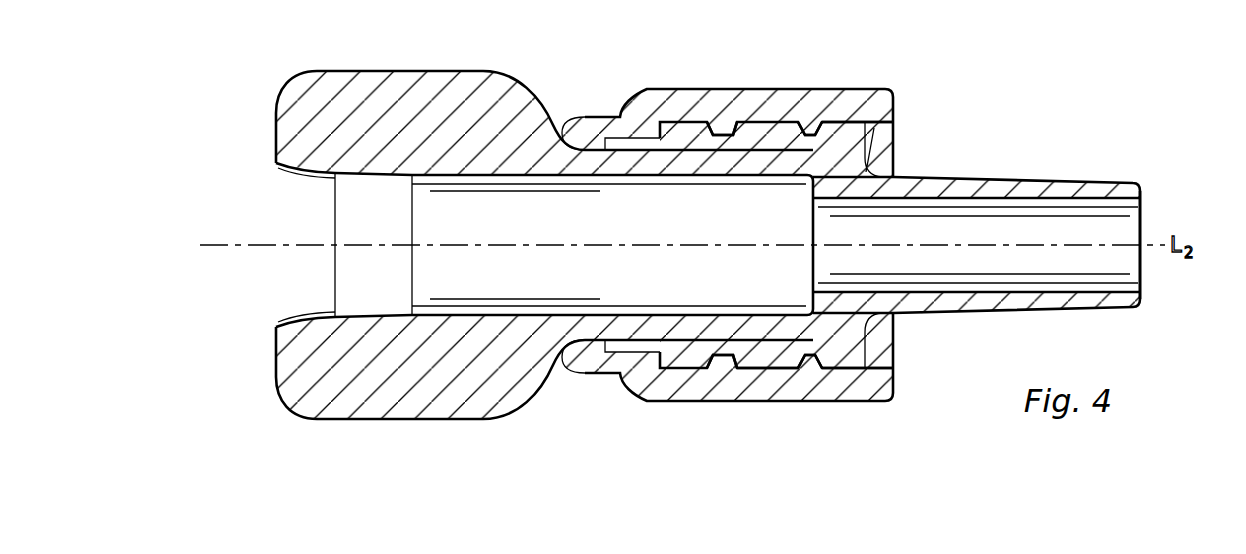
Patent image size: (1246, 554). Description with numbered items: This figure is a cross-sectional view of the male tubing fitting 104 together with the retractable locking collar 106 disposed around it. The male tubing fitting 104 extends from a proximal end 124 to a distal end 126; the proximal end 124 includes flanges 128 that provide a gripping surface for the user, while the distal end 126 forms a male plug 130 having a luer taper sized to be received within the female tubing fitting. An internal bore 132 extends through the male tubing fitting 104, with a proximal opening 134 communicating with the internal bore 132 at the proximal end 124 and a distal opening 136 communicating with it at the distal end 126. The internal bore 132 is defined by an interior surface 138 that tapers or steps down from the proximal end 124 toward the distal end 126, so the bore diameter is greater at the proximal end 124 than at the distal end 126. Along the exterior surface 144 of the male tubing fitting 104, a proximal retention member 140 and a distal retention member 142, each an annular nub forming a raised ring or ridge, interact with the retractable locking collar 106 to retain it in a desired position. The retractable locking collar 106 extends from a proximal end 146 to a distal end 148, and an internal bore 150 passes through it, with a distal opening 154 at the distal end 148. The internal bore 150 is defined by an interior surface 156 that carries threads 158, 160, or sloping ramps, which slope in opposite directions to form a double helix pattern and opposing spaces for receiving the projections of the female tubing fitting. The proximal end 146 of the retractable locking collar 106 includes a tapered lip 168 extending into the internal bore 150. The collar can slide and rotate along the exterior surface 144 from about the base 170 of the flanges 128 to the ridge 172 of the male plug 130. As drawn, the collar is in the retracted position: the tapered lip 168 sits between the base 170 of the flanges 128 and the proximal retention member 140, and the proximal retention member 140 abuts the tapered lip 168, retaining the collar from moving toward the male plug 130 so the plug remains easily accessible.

The male tubing fitting 104 is at (423, 68).
The retractable locking collar 106 is at (866, 82).
The proximal end 124 is at (236, 126).
The distal end 126 is at (1160, 183).
The flanges 128 is at (352, 70).
The male plug 130 is at (1008, 176).
The internal bore 132 is at (577, 260).
The proximal opening 134 is at (276, 205).
The distal opening 136 is at (1142, 277).
The interior surface 138 is at (502, 315).
The proximal retention member 140 is at (622, 150).
The distal retention member 142 is at (752, 140).
The exterior surface 144 is at (684, 135).
The proximal end 146 is at (543, 400).
The distal end 148 is at (912, 404).
The internal bore 150 is at (692, 365).
The distal opening 154 is at (880, 342).
The interior surface 156 is at (778, 368).
The thread 158 is at (806, 128).
The thread 160 is at (842, 356).
The tapered lip 168 is at (590, 125).
The base 170 is at (568, 122).
The ridge 172 is at (880, 130).